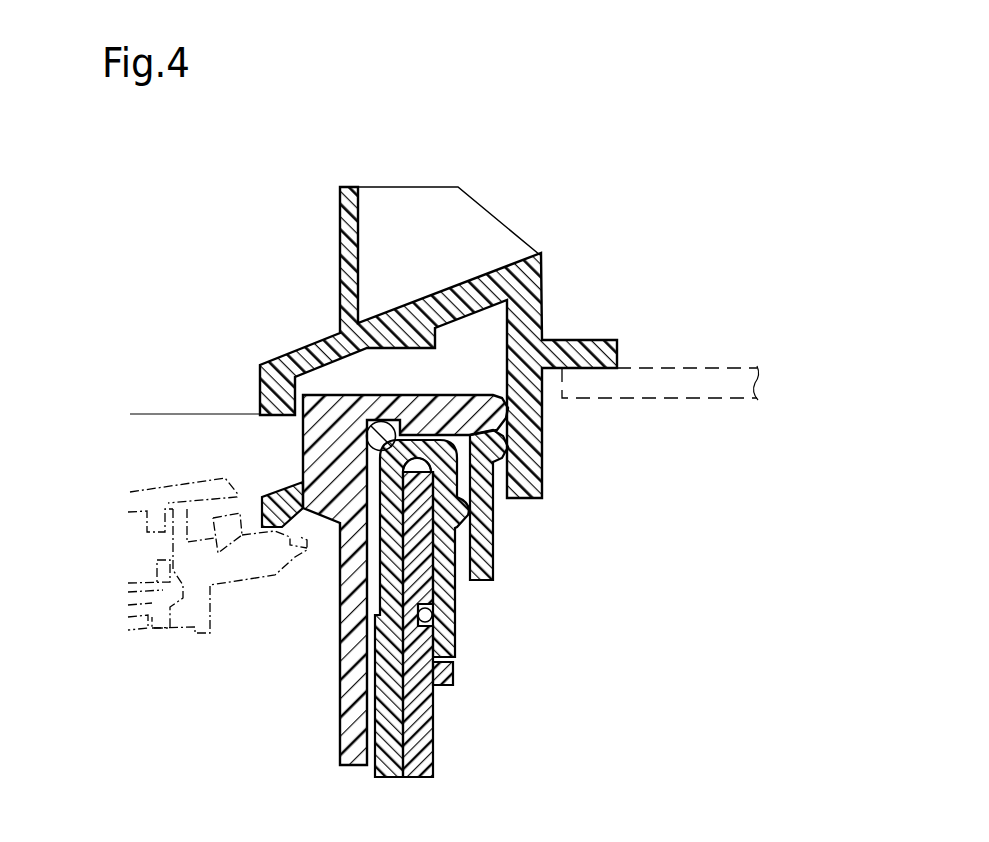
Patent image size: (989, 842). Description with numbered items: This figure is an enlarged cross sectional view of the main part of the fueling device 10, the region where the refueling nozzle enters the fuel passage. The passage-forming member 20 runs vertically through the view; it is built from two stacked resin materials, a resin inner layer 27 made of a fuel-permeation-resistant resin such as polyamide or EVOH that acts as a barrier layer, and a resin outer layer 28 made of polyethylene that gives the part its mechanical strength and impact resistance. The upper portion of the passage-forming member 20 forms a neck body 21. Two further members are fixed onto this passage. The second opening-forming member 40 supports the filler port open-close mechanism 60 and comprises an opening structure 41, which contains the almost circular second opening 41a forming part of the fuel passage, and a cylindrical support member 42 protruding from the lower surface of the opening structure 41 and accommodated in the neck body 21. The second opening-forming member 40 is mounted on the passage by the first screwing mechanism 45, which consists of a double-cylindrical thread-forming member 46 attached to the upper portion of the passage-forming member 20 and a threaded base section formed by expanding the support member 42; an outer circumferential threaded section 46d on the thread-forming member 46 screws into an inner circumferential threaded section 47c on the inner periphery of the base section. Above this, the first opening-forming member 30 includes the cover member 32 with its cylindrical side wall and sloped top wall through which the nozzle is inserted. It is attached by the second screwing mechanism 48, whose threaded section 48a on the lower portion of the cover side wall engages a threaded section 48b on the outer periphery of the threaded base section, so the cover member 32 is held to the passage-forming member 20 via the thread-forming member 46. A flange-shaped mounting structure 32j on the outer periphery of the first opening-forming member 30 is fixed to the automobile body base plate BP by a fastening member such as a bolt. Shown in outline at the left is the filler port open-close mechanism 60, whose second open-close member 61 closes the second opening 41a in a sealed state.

The fueling device 10 is at (549, 165).
The passage-forming member 20 is at (479, 580).
The neck body 21 is at (433, 690).
The resin inner layer 27 is at (410, 753).
The resin outer layer 28 is at (433, 720).
The first opening-forming member 30 is at (402, 342).
The cover member 32 is at (544, 262).
The mounting structure 32j is at (578, 338).
The automobile body base plate BP is at (730, 368).
The second opening-forming member 40 is at (215, 660).
The opening structure 41 is at (300, 548).
The second opening 41a is at (262, 498).
The support member 42 is at (340, 732).
The first screwing mechanism 45 is at (648, 533).
The thread-forming member 46 is at (456, 633).
The outer circumferential threaded section 46d is at (497, 577).
The inner circumferential threaded section 47c is at (462, 524).
The second screwing mechanism 48 is at (648, 437).
The threaded section 48a is at (508, 447).
The threaded section 48b is at (497, 456).
The filler port open-close mechanism 60 is at (177, 555).
The second open-close member 61 is at (130, 503).